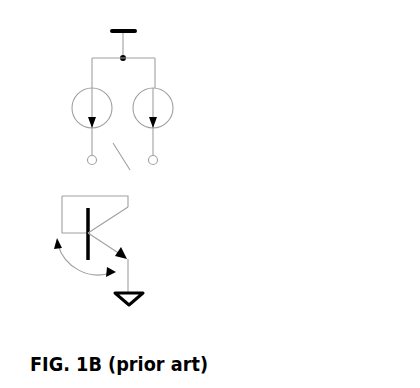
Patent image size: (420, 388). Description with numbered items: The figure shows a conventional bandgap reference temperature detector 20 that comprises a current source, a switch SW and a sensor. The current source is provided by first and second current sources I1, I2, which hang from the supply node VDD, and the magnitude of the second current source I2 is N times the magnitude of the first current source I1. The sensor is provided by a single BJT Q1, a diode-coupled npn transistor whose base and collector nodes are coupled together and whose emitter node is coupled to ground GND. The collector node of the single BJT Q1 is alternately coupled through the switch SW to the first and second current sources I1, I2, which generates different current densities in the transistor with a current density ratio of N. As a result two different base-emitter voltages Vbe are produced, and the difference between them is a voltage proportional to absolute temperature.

The conventional temperature detector 20 is at (219, 74).
The supply voltage node VDD is at (123, 35).
The first current source I1 is at (82, 111).
The second current source I2 is at (184, 111).
The switch SW is at (130, 155).
The single BJT Q1 is at (103, 244).
The ground node GND is at (127, 312).
The base-emitter voltage Vbe is at (82, 263).